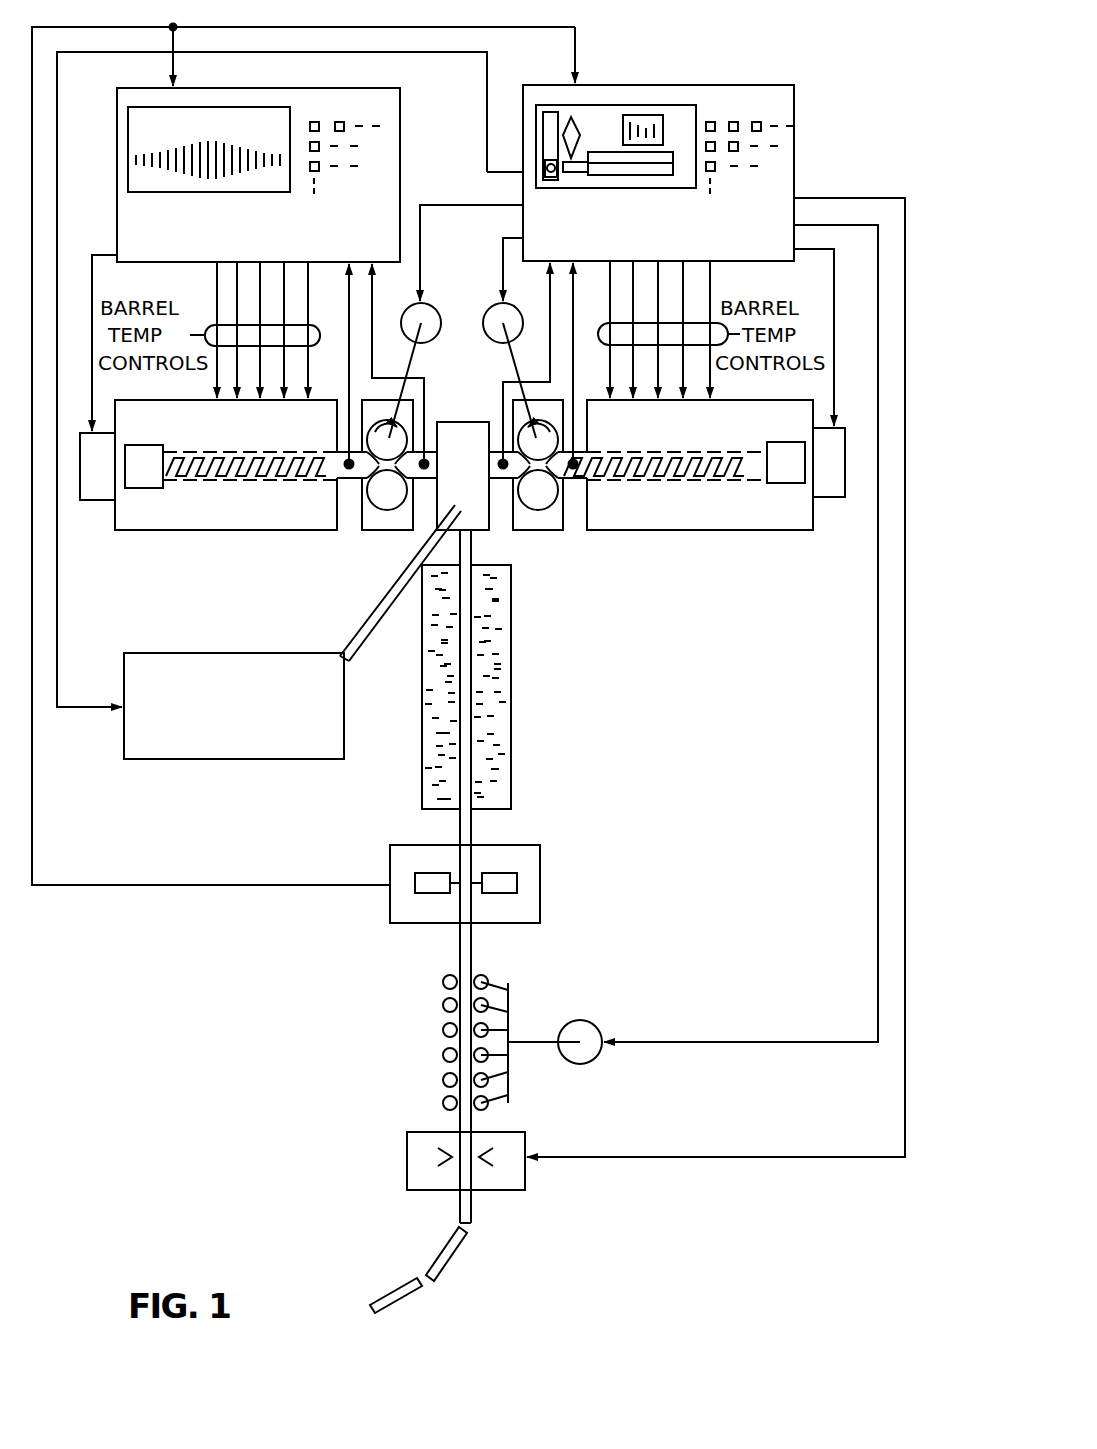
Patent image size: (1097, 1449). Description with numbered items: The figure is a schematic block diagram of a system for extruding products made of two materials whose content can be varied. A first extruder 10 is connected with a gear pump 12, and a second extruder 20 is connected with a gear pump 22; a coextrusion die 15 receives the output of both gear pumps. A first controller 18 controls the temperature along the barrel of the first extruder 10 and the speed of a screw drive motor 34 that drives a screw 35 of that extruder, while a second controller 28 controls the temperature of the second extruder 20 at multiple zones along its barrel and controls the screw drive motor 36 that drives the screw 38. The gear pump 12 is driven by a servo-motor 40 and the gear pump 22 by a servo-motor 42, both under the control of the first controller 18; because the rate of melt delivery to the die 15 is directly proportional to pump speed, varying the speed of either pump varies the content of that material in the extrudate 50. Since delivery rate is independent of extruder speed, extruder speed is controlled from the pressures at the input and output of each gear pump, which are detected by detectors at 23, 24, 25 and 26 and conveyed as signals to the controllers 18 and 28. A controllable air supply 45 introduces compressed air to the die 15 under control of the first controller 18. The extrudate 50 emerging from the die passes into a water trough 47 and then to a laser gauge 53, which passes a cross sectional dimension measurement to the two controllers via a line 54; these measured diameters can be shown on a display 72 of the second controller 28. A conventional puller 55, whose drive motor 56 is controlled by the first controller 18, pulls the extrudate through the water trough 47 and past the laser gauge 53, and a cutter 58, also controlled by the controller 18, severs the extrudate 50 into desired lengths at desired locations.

The first extruder 10 is at (697, 532).
The gear pump 12 is at (543, 533).
The coextrusion die 15 is at (458, 427).
The first controller 18 is at (681, 84).
The second extruder 20 is at (217, 533).
The gear pump 22 is at (385, 533).
The pressure detector 23 is at (573, 468).
The pressure detector 24 is at (503, 468).
The pressure detector 25 is at (426, 458).
The pressure detector 26 is at (349, 468).
The second controller 28 is at (402, 135).
The screw drive motor 34 is at (828, 485).
The screw 35 is at (628, 455).
The screw drive motor 36 is at (97, 493).
The screw 38 is at (277, 453).
The servo-motor 40 is at (493, 308).
The servo-motor 42 is at (411, 308).
The controllable air supply 45 is at (193, 762).
The water trough 47 is at (498, 710).
The extrudate 50 is at (460, 828).
The laser gauge 53 is at (545, 880).
The line 54 is at (135, 887).
The puller 55 is at (440, 963).
The drive motor 56 is at (577, 1030).
The cutter 58 is at (517, 1173).
The display 72 is at (128, 125).